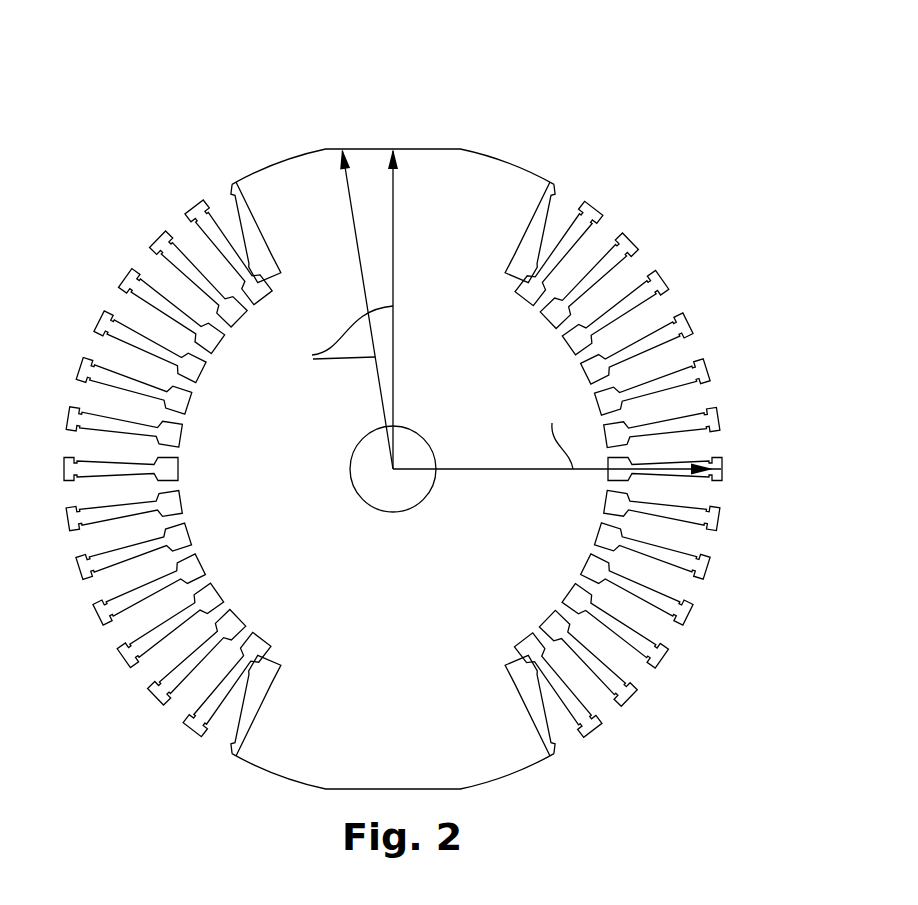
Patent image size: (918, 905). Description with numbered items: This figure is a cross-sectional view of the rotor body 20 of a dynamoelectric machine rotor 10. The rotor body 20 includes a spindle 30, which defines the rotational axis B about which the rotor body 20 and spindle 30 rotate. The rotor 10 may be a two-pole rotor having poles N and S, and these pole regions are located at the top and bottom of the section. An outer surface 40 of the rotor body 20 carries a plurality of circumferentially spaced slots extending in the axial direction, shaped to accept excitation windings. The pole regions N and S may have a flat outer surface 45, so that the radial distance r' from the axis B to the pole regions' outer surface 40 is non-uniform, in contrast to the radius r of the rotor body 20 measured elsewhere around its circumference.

The dynamoelectric machine rotor 10 is at (421, 67).
The rotor body 20 is at (492, 266).
The spindle 30 is at (298, 250).
The outer surface 40 is at (668, 276).
The flat outer surface 45 is at (403, 134).